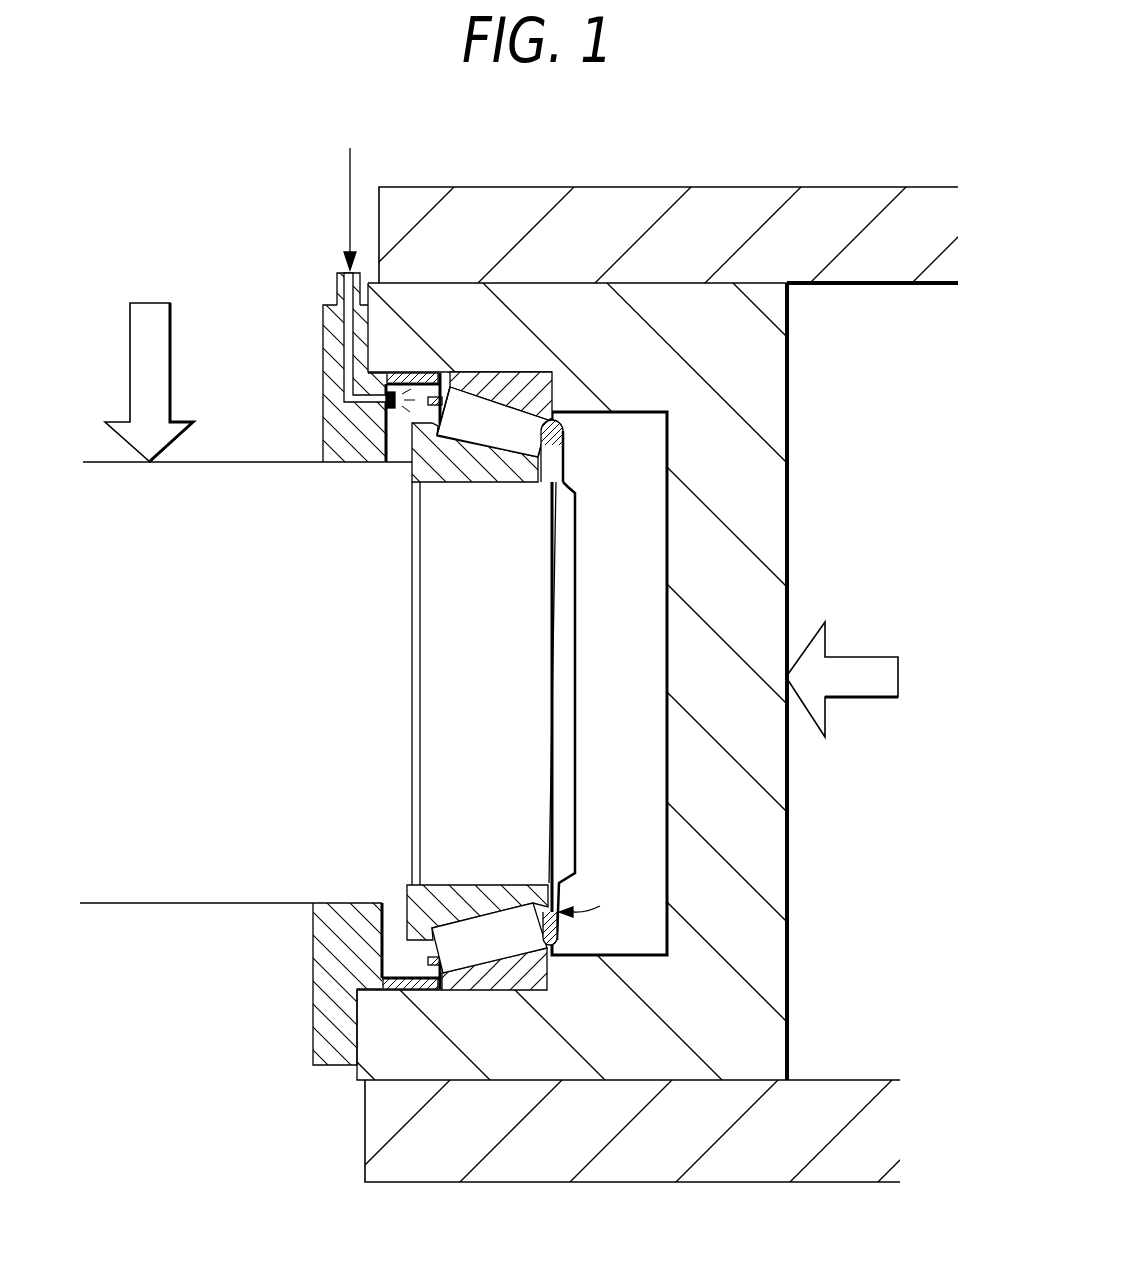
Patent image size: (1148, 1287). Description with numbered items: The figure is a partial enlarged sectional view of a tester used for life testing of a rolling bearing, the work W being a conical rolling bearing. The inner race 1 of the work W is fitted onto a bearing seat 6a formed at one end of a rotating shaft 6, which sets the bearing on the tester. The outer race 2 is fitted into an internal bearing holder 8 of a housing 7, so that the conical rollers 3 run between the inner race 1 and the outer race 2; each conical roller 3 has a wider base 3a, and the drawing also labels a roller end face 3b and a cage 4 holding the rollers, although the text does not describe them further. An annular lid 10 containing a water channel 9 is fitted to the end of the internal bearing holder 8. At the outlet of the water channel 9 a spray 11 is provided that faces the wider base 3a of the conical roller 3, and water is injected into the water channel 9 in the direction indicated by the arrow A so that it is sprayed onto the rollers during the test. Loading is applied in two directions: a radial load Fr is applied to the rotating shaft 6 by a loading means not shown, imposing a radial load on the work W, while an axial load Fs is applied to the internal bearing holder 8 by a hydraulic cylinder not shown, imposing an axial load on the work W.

The inner race 1 is at (435, 467).
The outer race 2 is at (512, 390).
The conical roller 3 is at (527, 428).
The wider base of the conical roller 3a is at (435, 438).
The small end face of roller 3b is at (543, 464).
The cage 4 is at (557, 465).
The rotating shaft 6 is at (224, 462).
The bearing seat 6a is at (437, 778).
The housing 7 is at (520, 203).
The internal bearing holder 8 is at (770, 362).
The water channel 9 is at (355, 292).
The annular lid 10 is at (330, 347).
The spray 11 is at (385, 433).
The arrow indicating water injection A is at (350, 192).
The work W is at (596, 906).
The radial load Fr is at (149, 362).
The axial load Fs is at (866, 679).